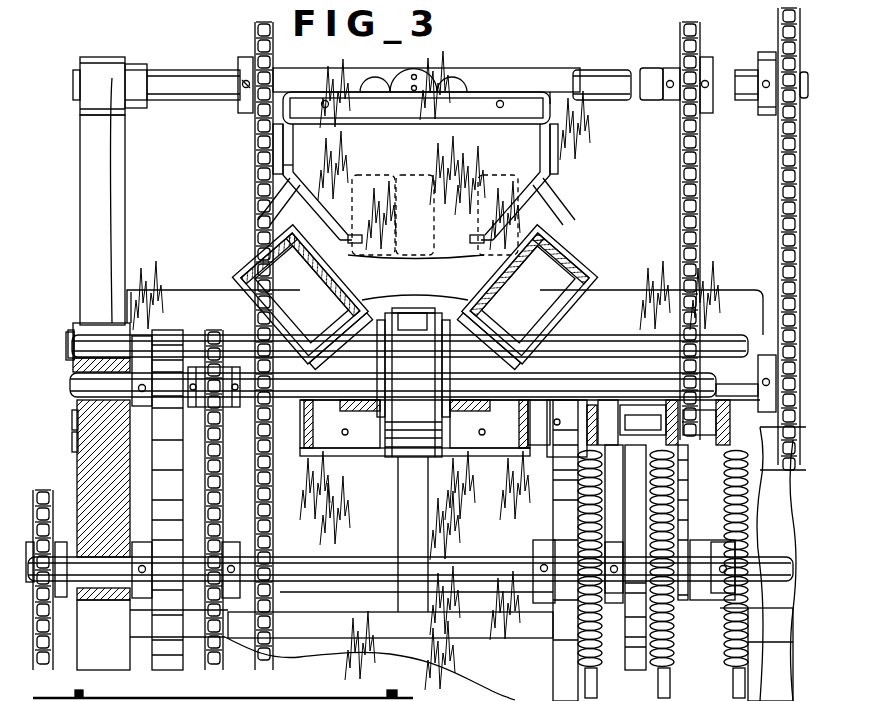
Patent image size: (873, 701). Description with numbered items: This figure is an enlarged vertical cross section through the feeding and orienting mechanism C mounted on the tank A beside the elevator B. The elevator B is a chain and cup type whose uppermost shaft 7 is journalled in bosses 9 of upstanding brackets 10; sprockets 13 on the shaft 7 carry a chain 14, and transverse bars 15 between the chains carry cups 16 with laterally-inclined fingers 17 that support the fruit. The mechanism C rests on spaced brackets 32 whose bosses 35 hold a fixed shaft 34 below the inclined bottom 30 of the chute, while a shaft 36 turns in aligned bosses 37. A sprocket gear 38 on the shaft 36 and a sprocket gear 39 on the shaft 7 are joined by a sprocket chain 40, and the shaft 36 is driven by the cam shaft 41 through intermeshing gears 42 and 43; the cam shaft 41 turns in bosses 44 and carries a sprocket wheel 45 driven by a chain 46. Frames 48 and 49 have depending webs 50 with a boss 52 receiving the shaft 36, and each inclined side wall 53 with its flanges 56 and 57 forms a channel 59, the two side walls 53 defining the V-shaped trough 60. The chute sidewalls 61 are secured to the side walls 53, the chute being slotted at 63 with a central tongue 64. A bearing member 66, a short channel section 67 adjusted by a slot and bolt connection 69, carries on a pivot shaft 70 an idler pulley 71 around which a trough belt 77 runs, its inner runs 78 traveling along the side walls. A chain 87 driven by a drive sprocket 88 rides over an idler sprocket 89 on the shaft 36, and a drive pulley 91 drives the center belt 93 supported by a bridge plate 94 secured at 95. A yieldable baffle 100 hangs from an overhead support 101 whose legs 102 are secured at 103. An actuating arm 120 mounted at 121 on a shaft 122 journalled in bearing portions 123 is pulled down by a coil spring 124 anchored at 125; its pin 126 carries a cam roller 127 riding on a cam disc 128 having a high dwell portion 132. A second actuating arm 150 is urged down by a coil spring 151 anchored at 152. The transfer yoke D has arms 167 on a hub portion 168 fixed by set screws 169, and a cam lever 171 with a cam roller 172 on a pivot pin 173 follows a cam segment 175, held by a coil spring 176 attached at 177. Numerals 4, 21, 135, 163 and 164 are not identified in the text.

The frame 4 is at (186, 298).
The uppermost shaft 7 is at (205, 78).
The bosses 9 is at (100, 58).
The upstanding brackets 10 is at (102, 201).
The sprockets 13 is at (246, 60).
The chain 14 is at (256, 197).
The transverse bars 15 is at (520, 78).
The cup 16 is at (420, 70).
The laterally-inclined fingers 17 is at (380, 80).
The base plate 21 is at (422, 510).
The inclined bottom 30 is at (406, 271).
The brackets 32 is at (103, 572).
The fixed shaft 34 is at (72, 345).
The aligned bosses 35 is at (72, 330).
The shaft 36 is at (86, 383).
The aligned bosses 37 is at (80, 406).
The sprocket gear 38 is at (400, 698).
The sprocket gear 39 is at (770, 53).
The sprocket chain 40 is at (786, 177).
The cam shaft 41 is at (366, 566).
The gear 42 is at (168, 334).
The gear 43 is at (165, 617).
The bosses 44 is at (106, 598).
The sprocket wheel 45 is at (49, 580).
The chain 46 is at (52, 645).
The frame 48 is at (328, 380).
The frame 49 is at (510, 380).
The depending web 50 is at (444, 338).
The boss 52 is at (334, 400).
The inclined side wall 53 is at (345, 262).
The integral flange 56 is at (242, 256).
The integral flange 57 is at (409, 330).
The channel 59 is at (252, 250).
The V-shaped trough 60 is at (382, 290).
The sidewalls 61 is at (566, 180).
The slots 63 is at (400, 256).
The central tongue 64 is at (410, 185).
The bearing member 66 is at (242, 266).
The short channel section 67 is at (246, 283).
The slot and bolt connection 69 is at (256, 230).
The pivot shaft 70 is at (418, 278).
The idler pulley 71 is at (414, 298).
The trough belt 77 is at (266, 300).
The inner runs 78 is at (416, 236).
The chain 87 is at (222, 478).
The drive sprocket 88 is at (232, 512).
The idler sprocket 89 is at (221, 387).
The drive pulley 91 is at (296, 170).
The auxiliary center belt 93 is at (413, 462).
The bridge plate 94 is at (430, 322).
The securing point 95 is at (496, 312).
The yieldable baffle 100 is at (416, 166).
The overhead support 101 is at (548, 92).
The legs 102 is at (274, 130).
The securing point 103 is at (438, 199).
The actuating arm 120 is at (582, 477).
The mounting 121 is at (568, 407).
The shaft 122 is at (73, 422).
The bearing portions 123 is at (73, 443).
The coil spring 124 is at (580, 505).
The anchor 125 is at (598, 688).
The pin 126 is at (604, 433).
The cam roller 127 is at (540, 448).
The cam disc 128 is at (554, 571).
The high dwell portion 132 is at (560, 646).
The slide bar 135 is at (625, 557).
The actuating arm 150 is at (620, 478).
The coil spring 151 is at (614, 512).
The anchor 152 is at (670, 686).
The block 163 is at (643, 419).
The block 164 is at (651, 422).
The arms 167 is at (304, 436).
The hub portion 168 is at (342, 446).
The set screws 169 is at (409, 473).
The cam lever 171 is at (763, 564).
The cam roller 172 is at (706, 422).
The pivot pin 173 is at (693, 522).
The cam segment 175 is at (712, 570).
The coil spring 176 is at (748, 512).
The attachment point 177 is at (745, 688).
The tank A is at (341, 621).
The elevator B is at (598, 66).
The feeding and orienting mechanism C is at (579, 195).
The transfer yoke D is at (317, 479).